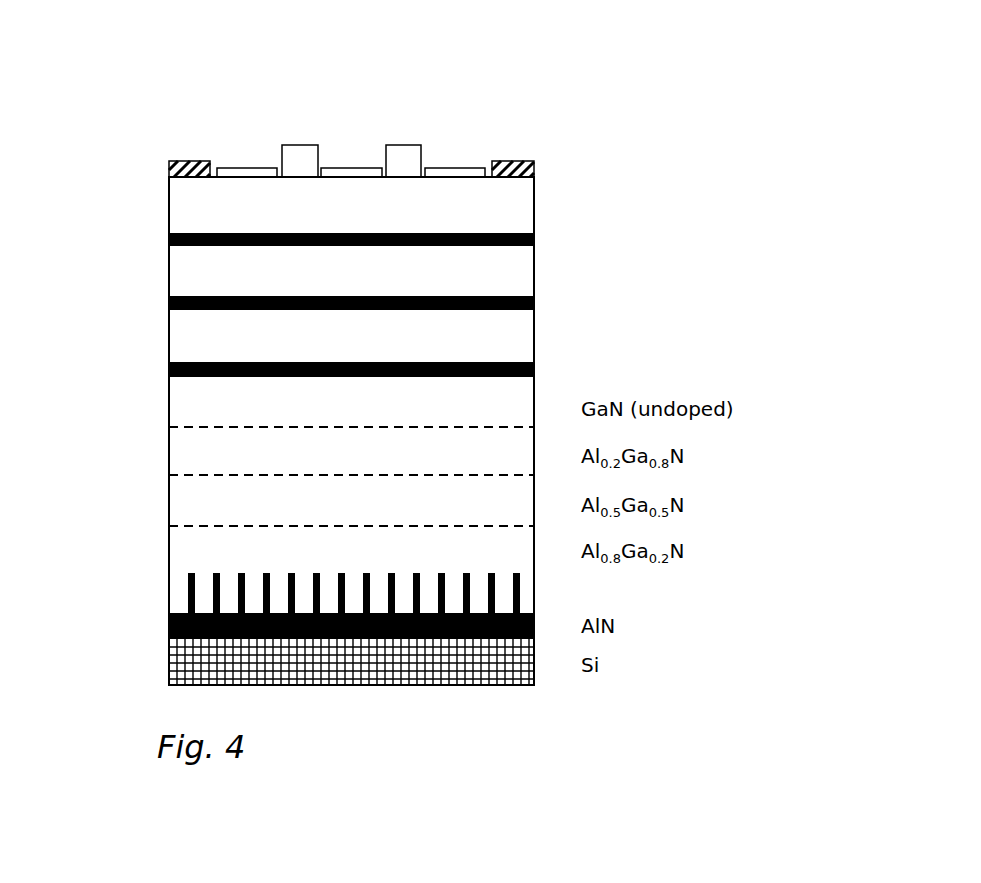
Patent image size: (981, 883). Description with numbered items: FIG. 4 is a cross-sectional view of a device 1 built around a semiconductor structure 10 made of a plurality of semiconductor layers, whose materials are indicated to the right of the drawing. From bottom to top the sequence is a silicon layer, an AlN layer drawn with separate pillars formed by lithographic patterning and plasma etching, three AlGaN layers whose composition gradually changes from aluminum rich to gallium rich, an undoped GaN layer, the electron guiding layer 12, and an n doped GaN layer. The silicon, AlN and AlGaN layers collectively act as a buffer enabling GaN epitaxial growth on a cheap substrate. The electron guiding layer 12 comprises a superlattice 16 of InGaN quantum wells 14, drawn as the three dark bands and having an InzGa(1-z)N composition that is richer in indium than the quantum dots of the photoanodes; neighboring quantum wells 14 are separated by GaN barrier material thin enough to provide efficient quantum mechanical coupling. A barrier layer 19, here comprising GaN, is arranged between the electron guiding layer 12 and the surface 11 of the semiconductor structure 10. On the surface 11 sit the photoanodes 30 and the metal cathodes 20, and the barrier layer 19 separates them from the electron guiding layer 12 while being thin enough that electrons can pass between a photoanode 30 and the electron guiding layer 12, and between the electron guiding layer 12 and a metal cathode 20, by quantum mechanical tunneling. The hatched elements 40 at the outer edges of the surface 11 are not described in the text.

The device 1 is at (153, 93).
The semiconductor structure 10 is at (560, 181).
The surface 11 is at (195, 190).
The electron guiding layer 12 is at (765, 223).
The InGaN quantum well 14 is at (418, 232).
The superlattice 16 is at (797, 305).
The barrier layer 19 is at (150, 225).
The metal cathode 20 is at (305, 145).
The photoanode 30 is at (247, 168).
The hatched contact 40 is at (192, 160).